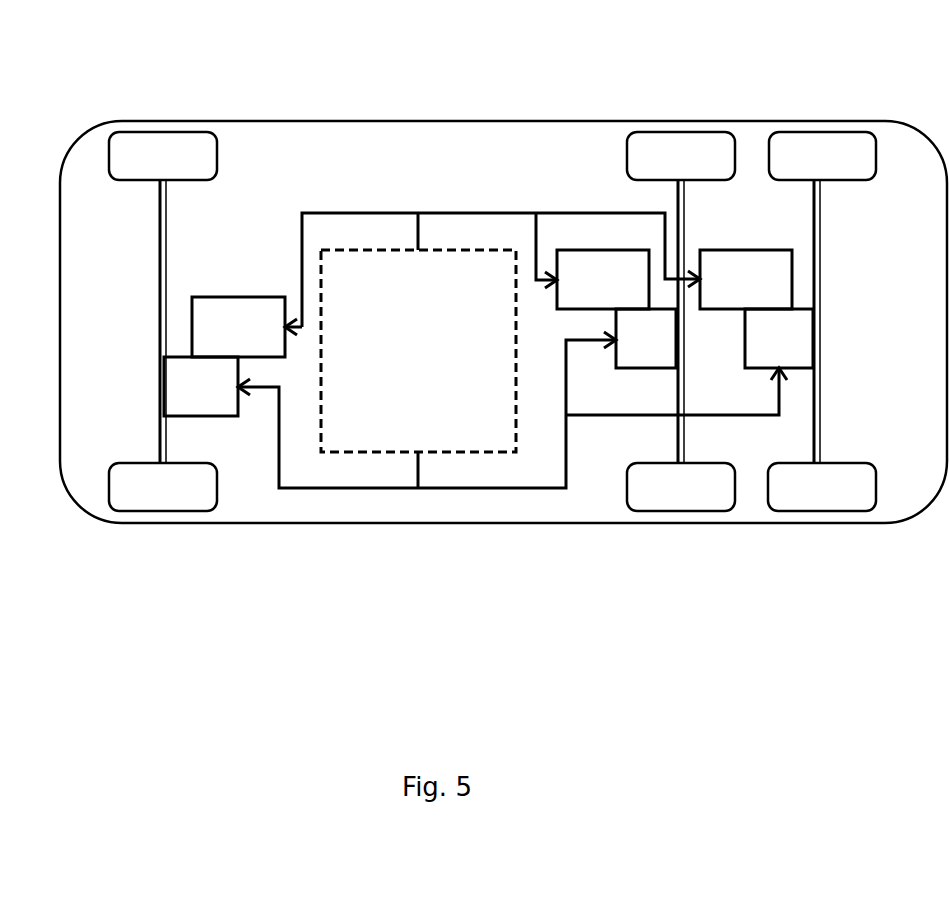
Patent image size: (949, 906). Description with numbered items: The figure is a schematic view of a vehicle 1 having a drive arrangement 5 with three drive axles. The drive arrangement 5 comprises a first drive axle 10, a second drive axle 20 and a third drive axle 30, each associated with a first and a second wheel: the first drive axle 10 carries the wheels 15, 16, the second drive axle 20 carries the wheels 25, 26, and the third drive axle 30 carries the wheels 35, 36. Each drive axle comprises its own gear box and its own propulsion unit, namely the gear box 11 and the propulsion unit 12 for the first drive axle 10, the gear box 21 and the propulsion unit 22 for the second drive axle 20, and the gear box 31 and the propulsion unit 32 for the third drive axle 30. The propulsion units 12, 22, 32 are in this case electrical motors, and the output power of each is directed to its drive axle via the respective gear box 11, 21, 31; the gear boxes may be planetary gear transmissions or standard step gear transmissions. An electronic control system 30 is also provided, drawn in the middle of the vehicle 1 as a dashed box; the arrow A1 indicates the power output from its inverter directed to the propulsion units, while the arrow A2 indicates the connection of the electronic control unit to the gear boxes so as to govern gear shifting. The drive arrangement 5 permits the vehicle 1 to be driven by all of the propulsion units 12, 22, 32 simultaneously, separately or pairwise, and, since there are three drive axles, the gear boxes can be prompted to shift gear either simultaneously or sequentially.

The vehicle 1 is at (422, 121).
The drive arrangement 5 is at (332, 170).
The first drive axle 10 is at (166, 228).
The gear box 11 is at (201, 386).
The propulsion unit 12 is at (238, 327).
The first wheel 15 is at (153, 132).
The second wheel 16 is at (178, 511).
The second drive axle 20 is at (820, 408).
The gear box 21 is at (779, 338).
The propulsion unit 22 is at (746, 279).
The first wheel 25 is at (817, 132).
The second wheel 26 is at (813, 511).
The third drive axle 30 is at (675, 200).
The gear box 31 is at (646, 338).
The propulsion unit 32 is at (603, 279).
The first wheel 35 is at (675, 132).
The second wheel 36 is at (668, 511).
The arrow indicating inverter output A1 is at (472, 213).
The arrow indicating gear shift control A2 is at (463, 488).